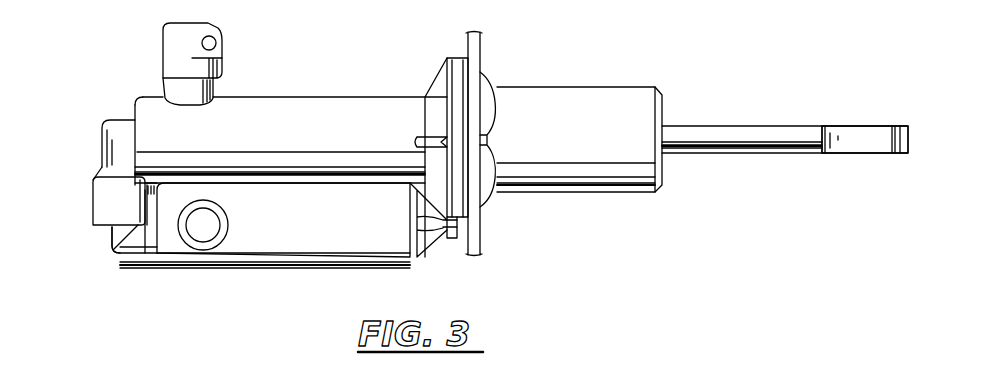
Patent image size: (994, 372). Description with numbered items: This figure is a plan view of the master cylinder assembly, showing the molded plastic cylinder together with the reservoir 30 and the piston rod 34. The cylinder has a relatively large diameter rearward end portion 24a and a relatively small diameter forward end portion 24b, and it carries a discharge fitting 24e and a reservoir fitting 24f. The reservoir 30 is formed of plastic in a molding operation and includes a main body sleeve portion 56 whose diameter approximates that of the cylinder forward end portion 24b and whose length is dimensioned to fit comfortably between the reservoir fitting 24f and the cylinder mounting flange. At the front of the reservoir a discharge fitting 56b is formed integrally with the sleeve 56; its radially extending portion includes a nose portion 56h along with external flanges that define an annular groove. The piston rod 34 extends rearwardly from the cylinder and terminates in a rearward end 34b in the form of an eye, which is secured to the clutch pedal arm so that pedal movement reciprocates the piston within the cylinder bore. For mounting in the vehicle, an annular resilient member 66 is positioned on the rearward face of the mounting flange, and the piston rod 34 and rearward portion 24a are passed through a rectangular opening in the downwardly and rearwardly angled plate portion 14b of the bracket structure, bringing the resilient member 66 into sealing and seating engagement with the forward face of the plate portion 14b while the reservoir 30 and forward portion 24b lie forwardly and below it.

The rearward end portion 24a is at (600, 92).
The forward end portion 24b is at (308, 112).
The discharge fitting 24e is at (157, 42).
The reservoir fitting 24f is at (93, 193).
The annular resilient member 66 is at (462, 67).
The plate portion 14b is at (477, 240).
The piston rod 34 is at (722, 130).
The rearward end 34b is at (860, 125).
The main body sleeve portion 56 is at (284, 225).
The discharge fitting 56b is at (110, 245).
The nose portion 56h is at (213, 250).
The reservoir 30 is at (320, 275).